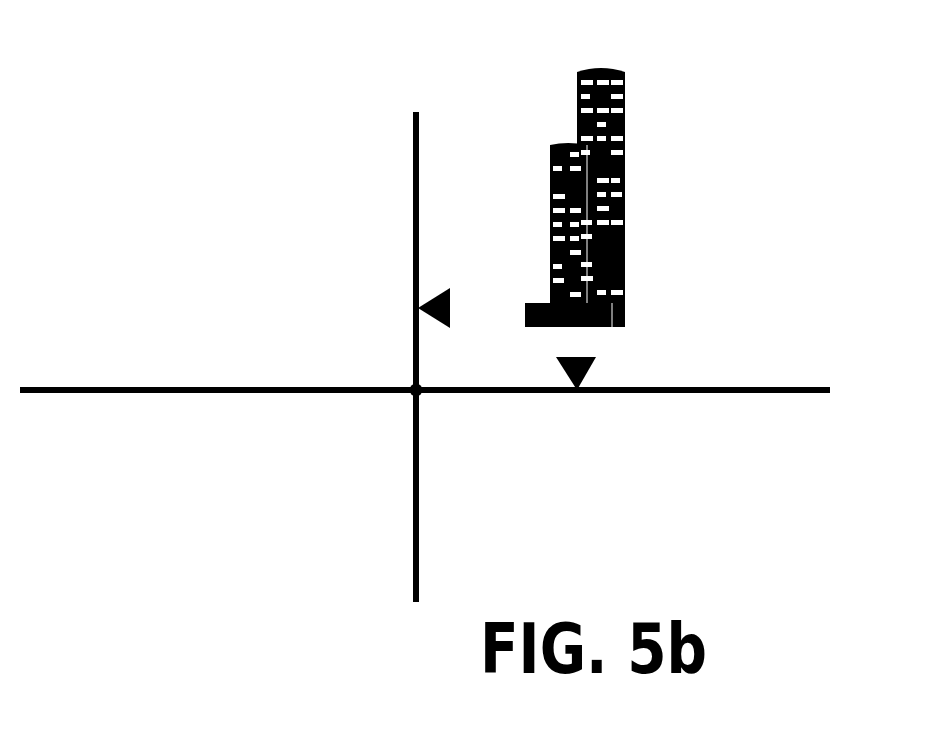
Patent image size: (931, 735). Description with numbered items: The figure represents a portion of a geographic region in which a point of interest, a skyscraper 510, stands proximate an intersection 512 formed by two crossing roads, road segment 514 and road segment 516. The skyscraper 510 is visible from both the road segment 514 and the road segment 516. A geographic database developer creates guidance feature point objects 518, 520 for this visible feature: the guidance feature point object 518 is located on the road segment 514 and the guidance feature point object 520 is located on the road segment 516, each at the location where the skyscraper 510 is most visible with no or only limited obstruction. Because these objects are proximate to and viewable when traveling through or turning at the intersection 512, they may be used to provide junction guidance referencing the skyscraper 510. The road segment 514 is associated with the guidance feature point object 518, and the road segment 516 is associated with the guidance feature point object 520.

The skyscraper 510 is at (623, 233).
The intersection 512 is at (416, 393).
The road segment 514 is at (177, 388).
The road segment 516 is at (418, 132).
The guidance feature point object 518 is at (567, 372).
The guidance feature point object 520 is at (440, 288).